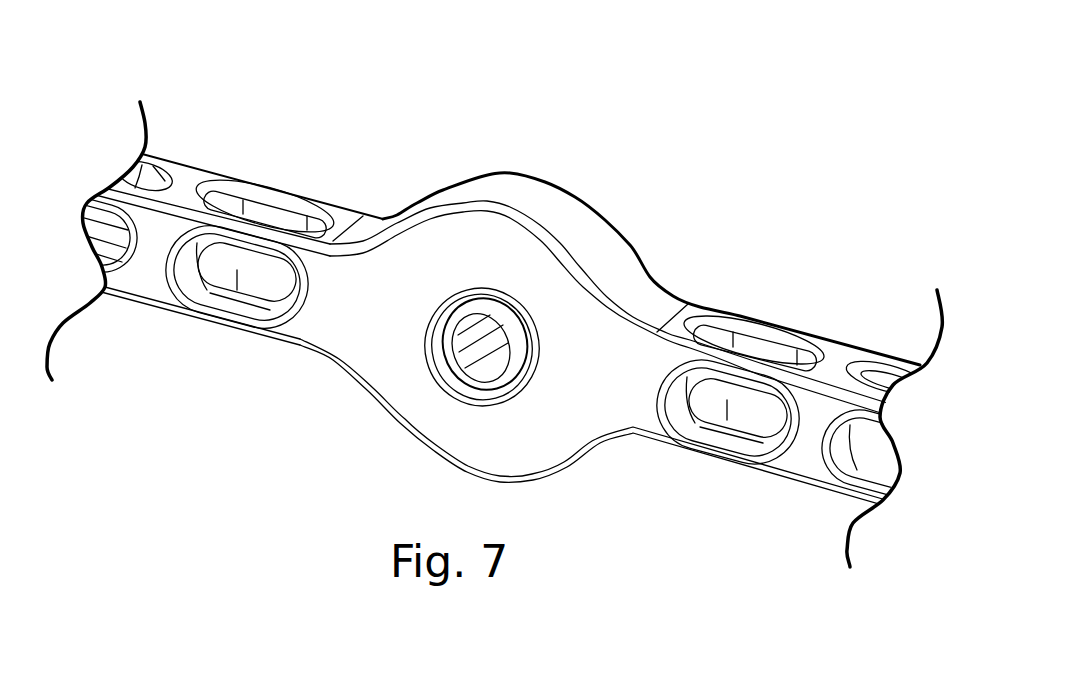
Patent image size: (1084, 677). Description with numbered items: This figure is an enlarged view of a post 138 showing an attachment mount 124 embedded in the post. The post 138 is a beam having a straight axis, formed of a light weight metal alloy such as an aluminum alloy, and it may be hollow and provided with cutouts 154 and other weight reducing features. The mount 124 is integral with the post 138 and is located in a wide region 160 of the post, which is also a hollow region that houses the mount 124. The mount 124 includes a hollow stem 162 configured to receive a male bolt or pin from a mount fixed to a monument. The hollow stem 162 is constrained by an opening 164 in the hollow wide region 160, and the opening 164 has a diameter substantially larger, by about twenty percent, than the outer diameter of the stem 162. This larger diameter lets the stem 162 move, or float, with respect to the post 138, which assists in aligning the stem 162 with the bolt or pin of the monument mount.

The mount 124 is at (610, 271).
The post 138 is at (490, 300).
The cutouts 154 is at (270, 218).
The wide region 160 is at (427, 263).
The hollow stem 162 is at (492, 302).
The opening 164 is at (433, 373).